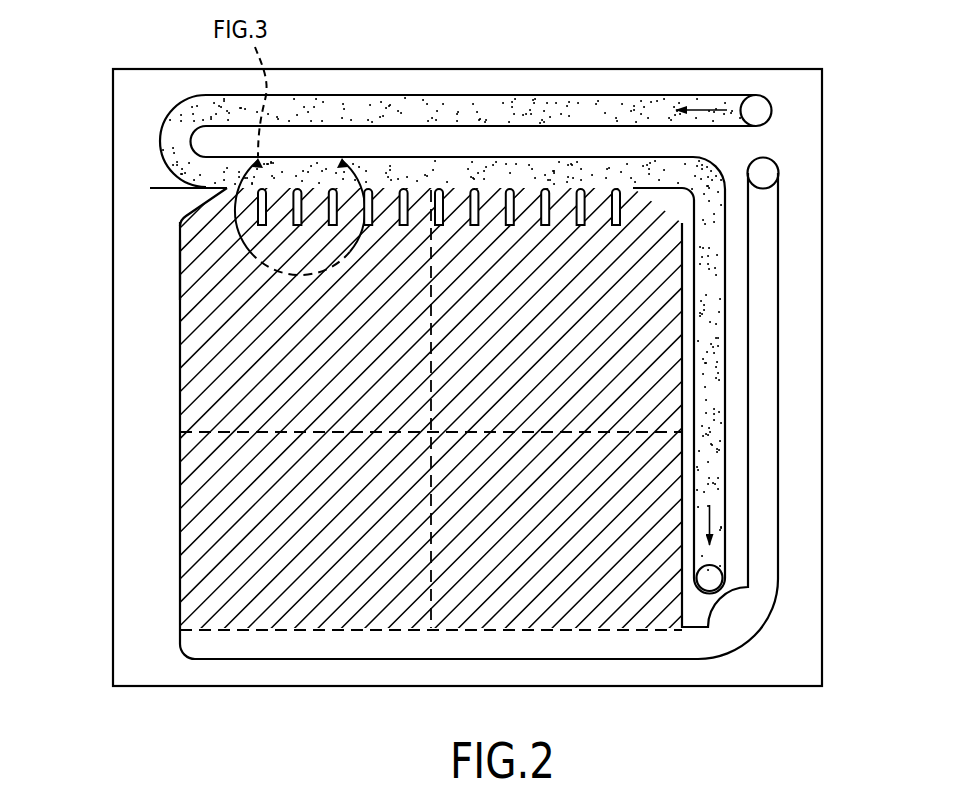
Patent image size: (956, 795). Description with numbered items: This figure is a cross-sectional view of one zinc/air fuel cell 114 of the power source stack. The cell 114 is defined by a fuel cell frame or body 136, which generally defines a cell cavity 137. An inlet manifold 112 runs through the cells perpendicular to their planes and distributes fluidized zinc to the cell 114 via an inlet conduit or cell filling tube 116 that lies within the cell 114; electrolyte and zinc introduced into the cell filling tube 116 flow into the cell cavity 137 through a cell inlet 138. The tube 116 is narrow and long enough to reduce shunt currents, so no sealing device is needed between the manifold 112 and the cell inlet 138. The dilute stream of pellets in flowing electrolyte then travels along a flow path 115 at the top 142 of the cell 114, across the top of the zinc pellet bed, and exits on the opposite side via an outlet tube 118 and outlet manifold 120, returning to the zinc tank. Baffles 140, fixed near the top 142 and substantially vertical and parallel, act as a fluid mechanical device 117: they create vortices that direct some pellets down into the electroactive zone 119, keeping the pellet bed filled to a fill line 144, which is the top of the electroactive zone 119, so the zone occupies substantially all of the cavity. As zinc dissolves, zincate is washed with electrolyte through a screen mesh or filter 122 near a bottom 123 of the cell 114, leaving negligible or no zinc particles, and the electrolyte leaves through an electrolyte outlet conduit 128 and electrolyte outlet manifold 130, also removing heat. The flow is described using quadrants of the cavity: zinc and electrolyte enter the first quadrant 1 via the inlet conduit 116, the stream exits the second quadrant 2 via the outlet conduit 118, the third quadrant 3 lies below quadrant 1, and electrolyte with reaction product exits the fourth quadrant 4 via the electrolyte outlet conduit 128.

The first quadrant 1 is at (341, 325).
The second quadrant 2 is at (572, 308).
The third quadrant 3 is at (320, 518).
The fourth quadrant 4 is at (575, 518).
The inlet manifold 112 is at (763, 94).
The cell 114 is at (168, 475).
The flow path 115 is at (383, 163).
The inlet conduit 116 is at (552, 95).
The fluid mechanical device 117 is at (220, 243).
The outlet tube 118 is at (725, 512).
The electroactive zone 119 is at (190, 372).
The outlet manifold 120 is at (721, 588).
The screen mesh or filter 122 is at (231, 632).
The bottom 123 is at (320, 660).
The electrolyte outlet conduit 128 is at (778, 588).
The electrolyte outlet manifold 130 is at (776, 172).
The fuel cell frame or body 136 is at (121, 623).
The cell cavity 137 is at (182, 320).
The cell inlet 138 is at (210, 172).
The baffles 140 is at (507, 193).
The top 142 is at (482, 158).
The fill line 144 is at (157, 188).